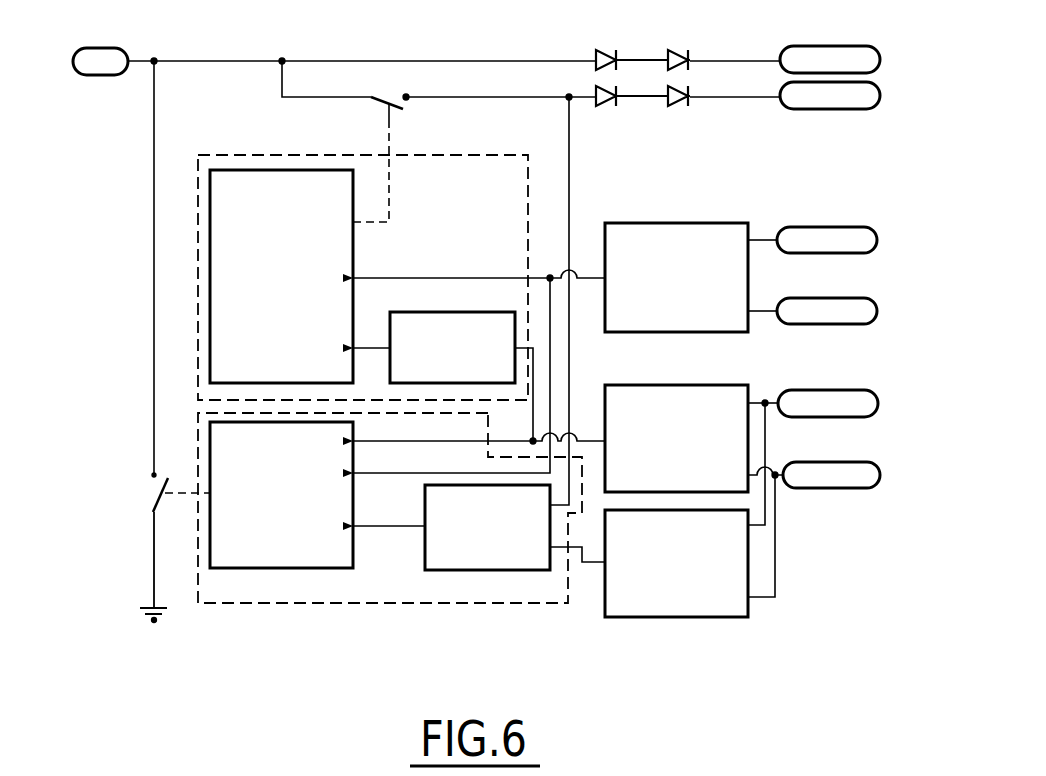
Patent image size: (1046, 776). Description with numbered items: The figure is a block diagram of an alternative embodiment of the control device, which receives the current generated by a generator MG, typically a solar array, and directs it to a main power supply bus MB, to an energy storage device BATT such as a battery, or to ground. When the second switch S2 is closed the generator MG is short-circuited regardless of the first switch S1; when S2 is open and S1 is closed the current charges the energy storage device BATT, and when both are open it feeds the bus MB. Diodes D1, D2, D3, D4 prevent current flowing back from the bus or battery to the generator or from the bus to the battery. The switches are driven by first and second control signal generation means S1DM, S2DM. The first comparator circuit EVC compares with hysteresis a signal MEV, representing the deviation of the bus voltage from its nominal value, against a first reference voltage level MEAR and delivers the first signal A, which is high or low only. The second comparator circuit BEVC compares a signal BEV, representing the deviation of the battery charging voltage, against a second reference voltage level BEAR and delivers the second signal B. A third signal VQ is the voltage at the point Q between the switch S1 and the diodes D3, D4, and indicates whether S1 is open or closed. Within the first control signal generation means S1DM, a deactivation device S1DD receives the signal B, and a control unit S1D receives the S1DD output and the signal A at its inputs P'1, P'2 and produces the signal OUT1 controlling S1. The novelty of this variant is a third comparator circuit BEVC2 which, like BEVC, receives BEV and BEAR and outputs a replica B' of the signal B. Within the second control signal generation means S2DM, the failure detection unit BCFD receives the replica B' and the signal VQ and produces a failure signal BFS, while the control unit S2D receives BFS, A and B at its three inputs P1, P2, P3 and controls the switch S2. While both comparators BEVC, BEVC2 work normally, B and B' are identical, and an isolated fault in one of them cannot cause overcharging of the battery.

The generator MG is at (334, 61).
The main power supply bus MB is at (785, 59).
The energy storage device BATT is at (785, 95).
The diode D1 is at (596, 49).
The diode D2 is at (668, 49).
The diode D3 is at (594, 108).
The diode D4 is at (666, 108).
The first switch S1 is at (439, 90).
The output signal OUT1 is at (391, 143).
The point Q is at (569, 92).
The third signal VQ is at (569, 140).
The first control signal generation means S1DM is at (223, 155).
The control unit S1D is at (240, 279).
The input P'2 is at (436, 270).
The input P'1 is at (356, 347).
The first signal A is at (454, 277).
The device for generating a signal for deactivating the first switch S1DD is at (480, 360).
The first comparator circuit EVC is at (704, 292).
The signal MEV is at (827, 240).
The first reference voltage level MEAR is at (827, 311).
The second comparator circuit BEVC is at (646, 445).
The signal BEV is at (828, 403).
The second reference voltage level BEAR is at (831, 475).
The second signal B is at (593, 414).
The replica of the signal B B' is at (577, 600).
The unit for detecting failure of charging BCFD is at (455, 535).
The third comparator circuit BEVC2 is at (636, 578).
The second control signal generation means S2DM is at (225, 605).
The control unit S2D is at (233, 501).
The input P1 is at (371, 534).
The input P2 is at (433, 388).
The input P3 is at (425, 445).
The signal indicating a failure condition BFS is at (405, 528).
The second switch S2 is at (170, 342).